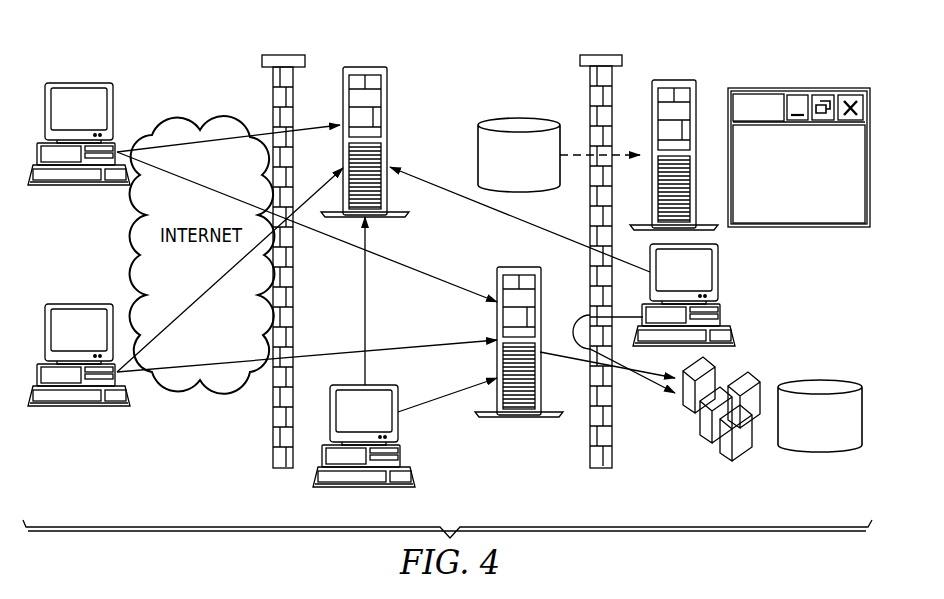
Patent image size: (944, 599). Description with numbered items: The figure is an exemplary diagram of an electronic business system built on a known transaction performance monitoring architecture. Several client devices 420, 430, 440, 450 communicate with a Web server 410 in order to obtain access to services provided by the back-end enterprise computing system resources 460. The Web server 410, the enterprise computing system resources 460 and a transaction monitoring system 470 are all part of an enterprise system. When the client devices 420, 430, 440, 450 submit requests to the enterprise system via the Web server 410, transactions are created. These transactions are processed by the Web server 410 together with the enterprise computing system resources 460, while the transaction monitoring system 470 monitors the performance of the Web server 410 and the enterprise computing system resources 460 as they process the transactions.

The Web server 410 is at (517, 417).
The client device 420 is at (80, 83).
The client device 430 is at (80, 408).
The client device 440 is at (400, 456).
The client device 450 is at (717, 273).
The enterprise computing system resources 460 is at (737, 455).
The transaction monitoring system 470 is at (365, 67).